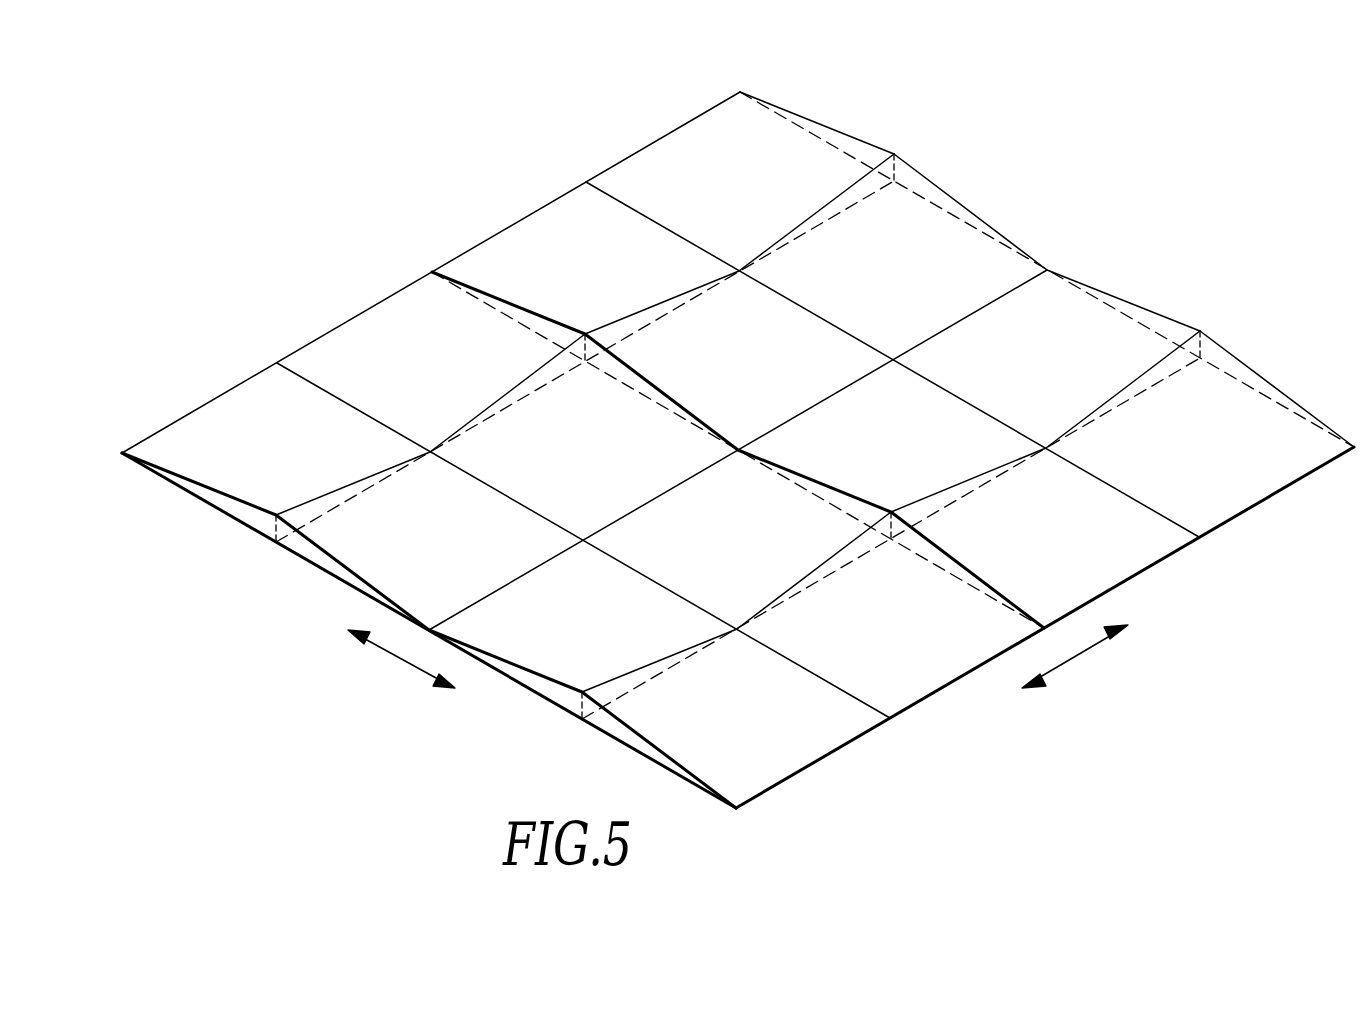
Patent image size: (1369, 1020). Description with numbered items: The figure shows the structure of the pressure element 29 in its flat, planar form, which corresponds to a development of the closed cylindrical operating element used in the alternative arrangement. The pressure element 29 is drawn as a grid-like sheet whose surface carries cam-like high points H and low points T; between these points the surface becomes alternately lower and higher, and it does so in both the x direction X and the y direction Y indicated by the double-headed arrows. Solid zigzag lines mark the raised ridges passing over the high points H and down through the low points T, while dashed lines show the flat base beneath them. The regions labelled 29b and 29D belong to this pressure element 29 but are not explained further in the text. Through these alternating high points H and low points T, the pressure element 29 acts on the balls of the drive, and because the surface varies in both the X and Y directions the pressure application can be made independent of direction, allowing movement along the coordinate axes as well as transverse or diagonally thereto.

The pressure element 29 is at (561, 152).
The sheet surface panel 29b is at (745, 138).
The sheet facet / panel region 29D is at (814, 406).
The high points H is at (894, 154).
The low points T is at (739, 271).
The x direction X is at (1075, 660).
The y direction Y is at (397, 662).